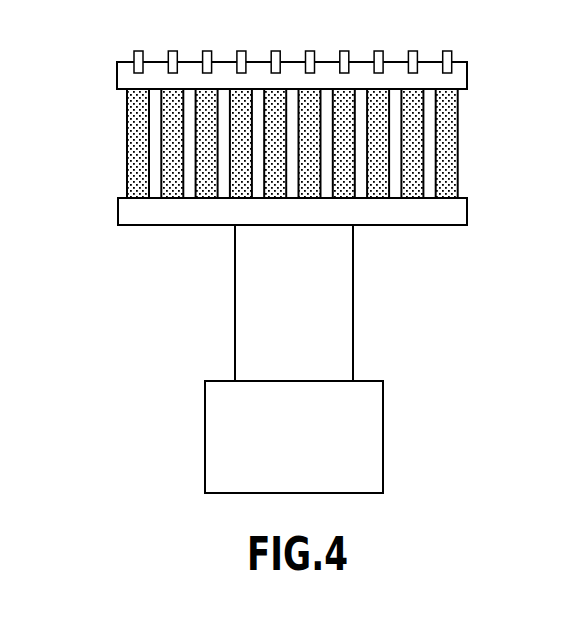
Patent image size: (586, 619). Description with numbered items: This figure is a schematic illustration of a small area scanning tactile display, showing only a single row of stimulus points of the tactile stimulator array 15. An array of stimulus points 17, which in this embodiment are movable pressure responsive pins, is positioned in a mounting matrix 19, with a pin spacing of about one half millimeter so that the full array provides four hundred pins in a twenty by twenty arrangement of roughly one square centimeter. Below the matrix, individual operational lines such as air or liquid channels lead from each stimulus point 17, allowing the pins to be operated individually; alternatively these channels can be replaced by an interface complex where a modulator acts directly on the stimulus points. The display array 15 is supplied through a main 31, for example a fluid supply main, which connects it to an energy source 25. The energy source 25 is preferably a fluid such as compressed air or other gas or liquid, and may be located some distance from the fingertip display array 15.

The tactile stimulator array 15 is at (285, 143).
The stimulus points 17 is at (239, 51).
The mounting matrix 19 is at (467, 80).
The main 31 is at (272, 323).
The energy source 25 is at (230, 420).